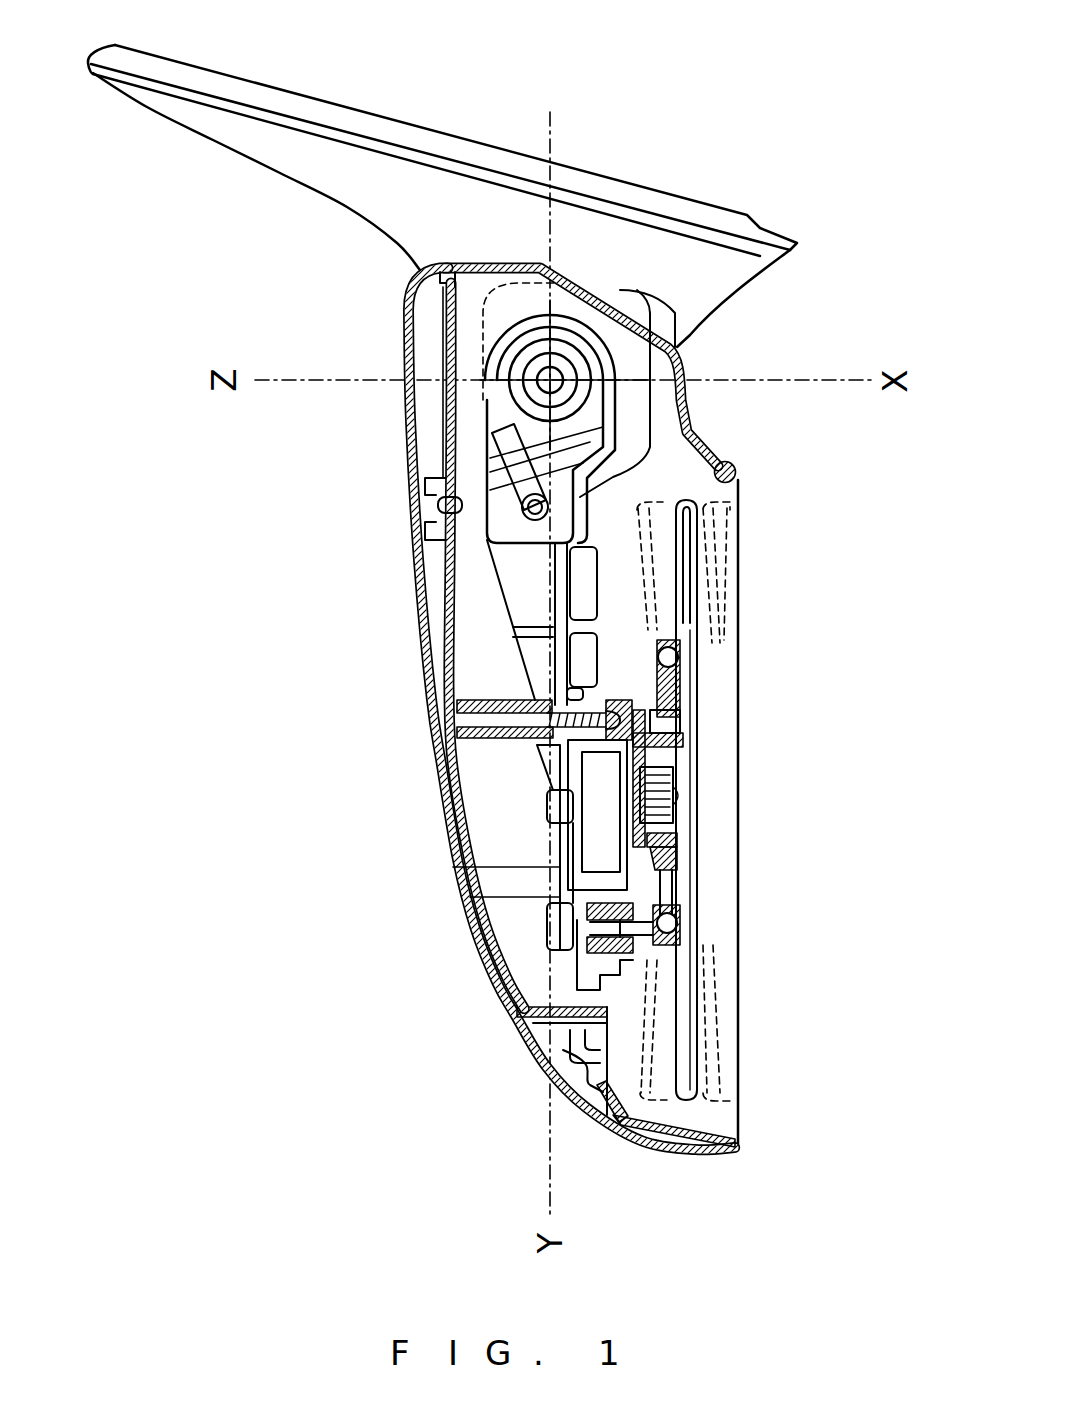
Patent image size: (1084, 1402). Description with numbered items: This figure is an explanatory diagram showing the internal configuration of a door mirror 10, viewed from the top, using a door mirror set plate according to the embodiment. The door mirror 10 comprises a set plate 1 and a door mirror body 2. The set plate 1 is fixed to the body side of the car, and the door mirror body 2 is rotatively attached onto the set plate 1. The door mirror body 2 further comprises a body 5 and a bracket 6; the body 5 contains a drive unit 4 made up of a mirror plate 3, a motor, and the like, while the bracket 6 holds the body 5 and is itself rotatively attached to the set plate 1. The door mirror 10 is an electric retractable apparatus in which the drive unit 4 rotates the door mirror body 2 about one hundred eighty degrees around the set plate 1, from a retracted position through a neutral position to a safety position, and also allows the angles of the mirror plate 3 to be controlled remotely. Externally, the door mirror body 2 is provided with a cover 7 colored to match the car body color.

The door mirror set plate 1 is at (833, 454).
The door mirror body 2 is at (843, 752).
The mirror plate 3 is at (795, 1012).
The drive unit 4 is at (600, 837).
The body 5 is at (568, 963).
The bracket 6 is at (520, 591).
The cover 7 is at (430, 725).
The door mirror 10 is at (397, 1217).